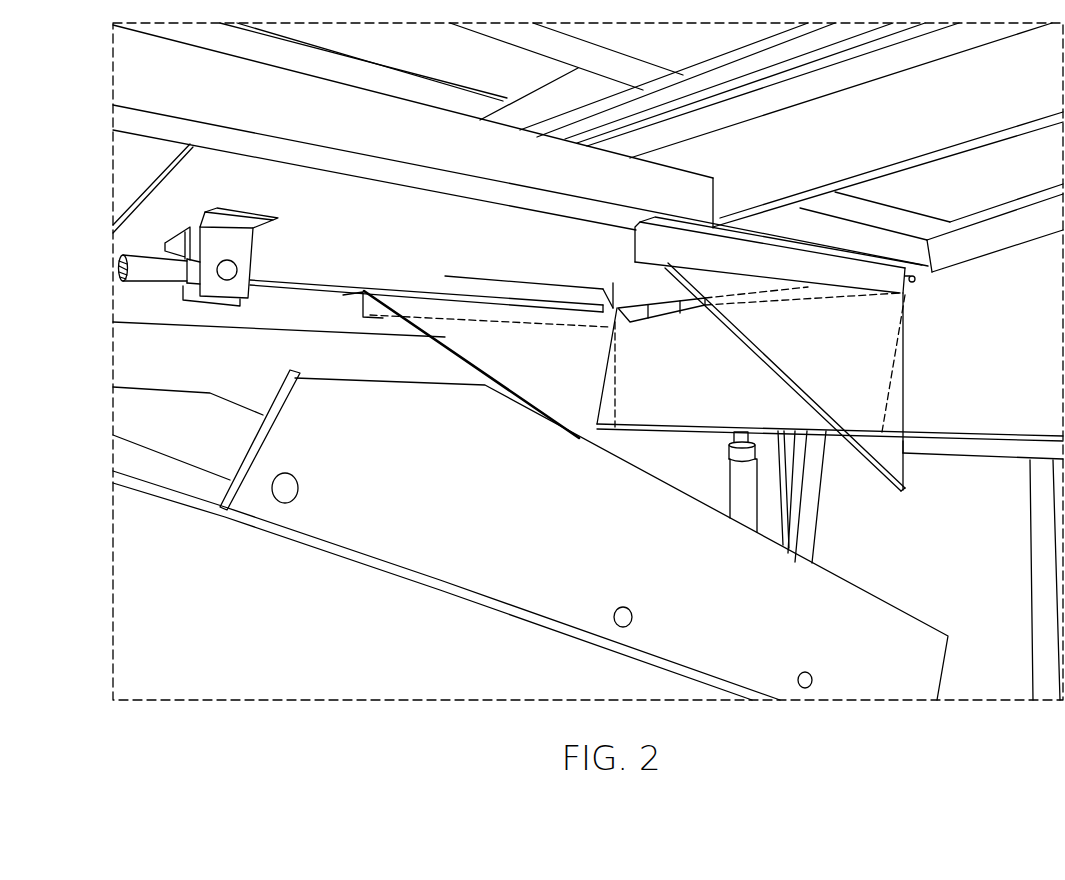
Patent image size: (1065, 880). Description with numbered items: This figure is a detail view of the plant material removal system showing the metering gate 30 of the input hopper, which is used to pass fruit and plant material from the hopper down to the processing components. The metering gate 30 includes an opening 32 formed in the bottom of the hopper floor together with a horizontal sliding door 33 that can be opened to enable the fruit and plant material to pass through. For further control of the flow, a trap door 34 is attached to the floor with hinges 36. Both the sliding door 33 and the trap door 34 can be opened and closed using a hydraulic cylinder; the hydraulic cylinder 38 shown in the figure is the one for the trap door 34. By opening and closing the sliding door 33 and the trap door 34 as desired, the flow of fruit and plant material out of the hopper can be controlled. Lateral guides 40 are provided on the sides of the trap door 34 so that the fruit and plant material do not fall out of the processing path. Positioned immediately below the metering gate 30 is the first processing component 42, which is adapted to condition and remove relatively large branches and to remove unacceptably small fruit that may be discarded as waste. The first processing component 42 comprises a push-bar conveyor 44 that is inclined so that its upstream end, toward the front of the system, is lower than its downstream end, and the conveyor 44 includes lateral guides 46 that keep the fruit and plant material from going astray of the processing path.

The metering gate 30 is at (918, 363).
The opening 32 is at (610, 285).
The horizontal sliding door 33 is at (334, 230).
The trap door 34 is at (698, 406).
The hinges 36 is at (657, 310).
The hydraulic cylinder 38 is at (740, 487).
The lateral guides 40 is at (455, 346).
The first processing component 42 is at (888, 594).
The push-bar conveyor 44 is at (272, 688).
The lateral guides 46 is at (293, 395).